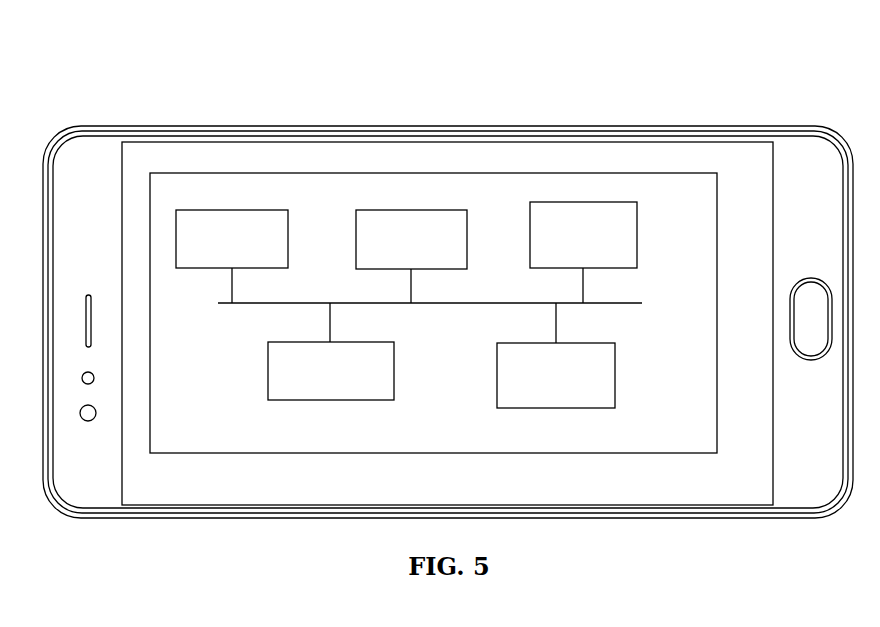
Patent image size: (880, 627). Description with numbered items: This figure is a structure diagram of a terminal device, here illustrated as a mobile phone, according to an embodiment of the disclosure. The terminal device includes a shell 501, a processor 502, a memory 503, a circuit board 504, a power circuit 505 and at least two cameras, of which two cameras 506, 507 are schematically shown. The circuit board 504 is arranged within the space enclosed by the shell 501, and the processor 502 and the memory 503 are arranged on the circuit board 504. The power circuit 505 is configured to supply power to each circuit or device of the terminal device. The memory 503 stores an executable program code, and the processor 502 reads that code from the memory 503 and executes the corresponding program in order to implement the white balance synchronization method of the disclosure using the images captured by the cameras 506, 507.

The shell 501 is at (342, 130).
The processor 502 is at (615, 370).
The memory 503 is at (637, 226).
The circuit board 504 is at (630, 173).
The power circuit 505 is at (394, 362).
The camera 506 is at (467, 230).
The camera 507 is at (288, 232).